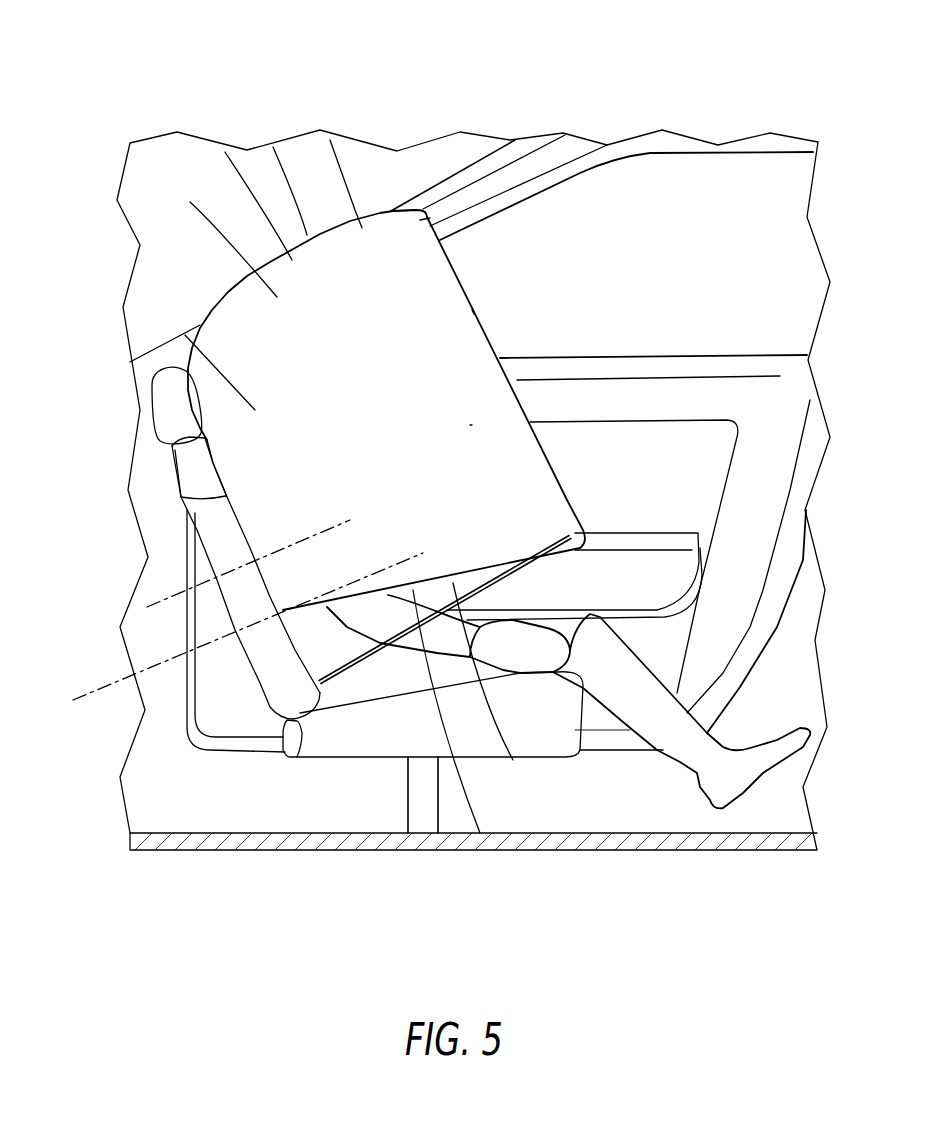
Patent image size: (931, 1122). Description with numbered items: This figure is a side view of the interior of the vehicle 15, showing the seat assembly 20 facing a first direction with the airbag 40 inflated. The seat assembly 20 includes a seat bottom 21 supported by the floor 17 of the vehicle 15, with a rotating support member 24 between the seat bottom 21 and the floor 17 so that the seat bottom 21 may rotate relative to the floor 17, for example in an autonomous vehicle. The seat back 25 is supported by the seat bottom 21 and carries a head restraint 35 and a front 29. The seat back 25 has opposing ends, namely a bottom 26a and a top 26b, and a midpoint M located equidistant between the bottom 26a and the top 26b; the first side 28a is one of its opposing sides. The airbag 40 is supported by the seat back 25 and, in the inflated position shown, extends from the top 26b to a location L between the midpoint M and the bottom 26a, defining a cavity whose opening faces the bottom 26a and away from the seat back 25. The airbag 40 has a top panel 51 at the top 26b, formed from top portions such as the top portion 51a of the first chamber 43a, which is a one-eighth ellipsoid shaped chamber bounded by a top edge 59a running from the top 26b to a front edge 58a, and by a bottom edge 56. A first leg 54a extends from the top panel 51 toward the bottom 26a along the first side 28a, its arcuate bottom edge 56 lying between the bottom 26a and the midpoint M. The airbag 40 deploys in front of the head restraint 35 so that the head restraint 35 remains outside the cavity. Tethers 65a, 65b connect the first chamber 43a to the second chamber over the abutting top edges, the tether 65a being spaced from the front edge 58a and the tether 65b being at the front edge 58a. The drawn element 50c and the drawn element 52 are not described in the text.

The vehicle 15 is at (153, 833).
The floor 17 is at (640, 840).
The seat assembly 20 is at (283, 698).
The seat bottom 21 is at (353, 740).
The rotating support member 24 is at (420, 810).
The seat back 25 is at (220, 547).
The bottom 26a is at (297, 703).
The top 26b is at (190, 457).
The first side 28a is at (278, 661).
The front 29 is at (227, 496).
The head restraint 35 is at (162, 402).
The airbag 40 is at (252, 340).
The first chamber 43a is at (197, 322).
The tether 50c is at (480, 833).
The top panel 51 is at (380, 240).
The top portion 51a is at (225, 152).
The airbag cushion 52 is at (190, 202).
The first leg 54a is at (470, 425).
The bottom edge 56 is at (513, 760).
The front edge 58a is at (472, 310).
The top edge 59a is at (273, 147).
The tether 65a is at (330, 140).
The tether 65b is at (425, 213).
The midpoint M is at (163, 598).
The location L is at (102, 682).